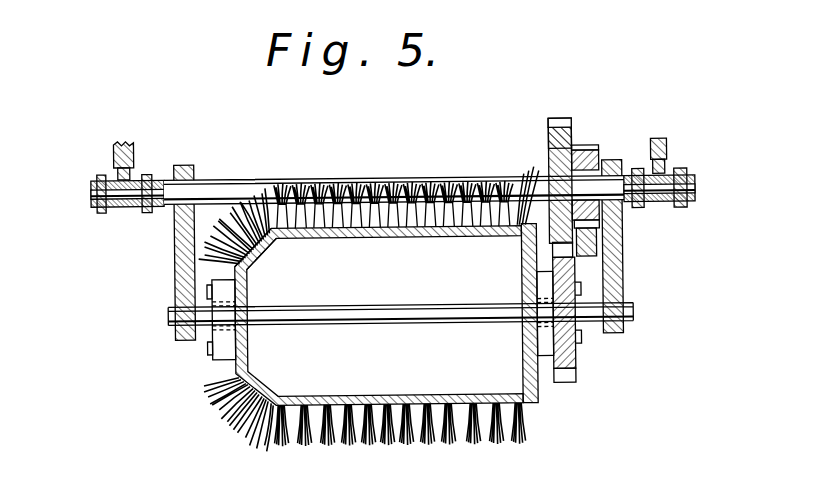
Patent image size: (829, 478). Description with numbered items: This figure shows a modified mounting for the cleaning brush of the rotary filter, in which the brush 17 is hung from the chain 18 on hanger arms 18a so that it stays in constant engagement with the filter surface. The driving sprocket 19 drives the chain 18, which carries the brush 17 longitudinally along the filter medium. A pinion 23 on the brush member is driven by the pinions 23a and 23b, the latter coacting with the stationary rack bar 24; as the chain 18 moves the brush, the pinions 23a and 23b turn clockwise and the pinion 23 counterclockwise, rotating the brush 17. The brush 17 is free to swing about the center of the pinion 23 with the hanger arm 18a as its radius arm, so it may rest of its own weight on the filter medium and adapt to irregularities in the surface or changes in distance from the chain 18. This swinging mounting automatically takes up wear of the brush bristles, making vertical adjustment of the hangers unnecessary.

The brush 17 is at (401, 309).
The chain 18 is at (92, 184).
The hanger arm 18a is at (636, 290).
The driving sprocket 19 is at (133, 150).
The pinion 23 is at (575, 378).
The pinion 23a is at (552, 124).
The pinion 23b is at (598, 152).
The rack bar 24 is at (597, 249).